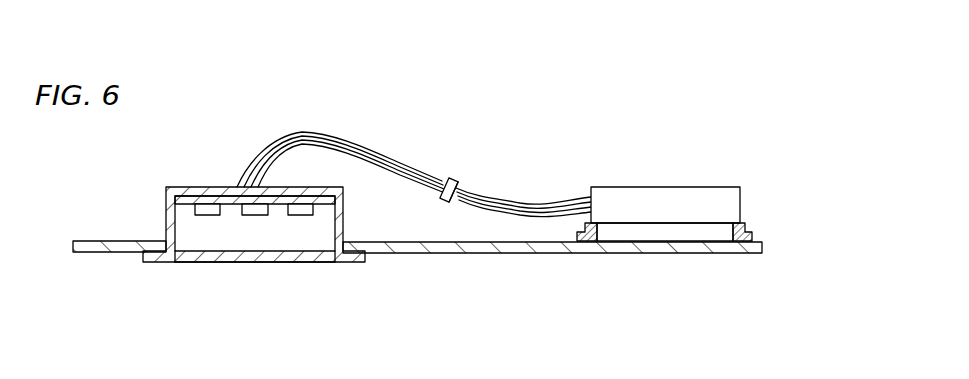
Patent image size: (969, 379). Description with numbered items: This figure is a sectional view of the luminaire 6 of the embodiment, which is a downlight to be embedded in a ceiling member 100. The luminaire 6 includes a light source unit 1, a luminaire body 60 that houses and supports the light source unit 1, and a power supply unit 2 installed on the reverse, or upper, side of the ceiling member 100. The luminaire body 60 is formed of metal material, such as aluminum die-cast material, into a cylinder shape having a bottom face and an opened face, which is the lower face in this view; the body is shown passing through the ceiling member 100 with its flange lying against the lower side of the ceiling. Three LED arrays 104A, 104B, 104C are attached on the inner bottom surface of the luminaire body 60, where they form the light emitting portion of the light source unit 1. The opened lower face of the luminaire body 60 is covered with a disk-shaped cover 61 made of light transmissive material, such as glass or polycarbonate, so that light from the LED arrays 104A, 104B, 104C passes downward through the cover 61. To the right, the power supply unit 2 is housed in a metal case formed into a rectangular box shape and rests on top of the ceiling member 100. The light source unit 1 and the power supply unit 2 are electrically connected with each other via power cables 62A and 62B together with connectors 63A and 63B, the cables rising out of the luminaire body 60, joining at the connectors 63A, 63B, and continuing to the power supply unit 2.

The light source unit 1 is at (275, 217).
The power supply unit 2 is at (668, 176).
The luminaire 6 is at (324, 275).
The luminaire body 60 is at (153, 213).
The cover 61 is at (195, 259).
The power cable 62A is at (383, 150).
The power cable 62B is at (543, 207).
The connector 63A is at (450, 179).
The connector 63B is at (457, 190).
The ceiling member 100 is at (548, 254).
The LED array 104A is at (300, 215).
The LED array 104B is at (255, 215).
The LED array 104C is at (211, 215).